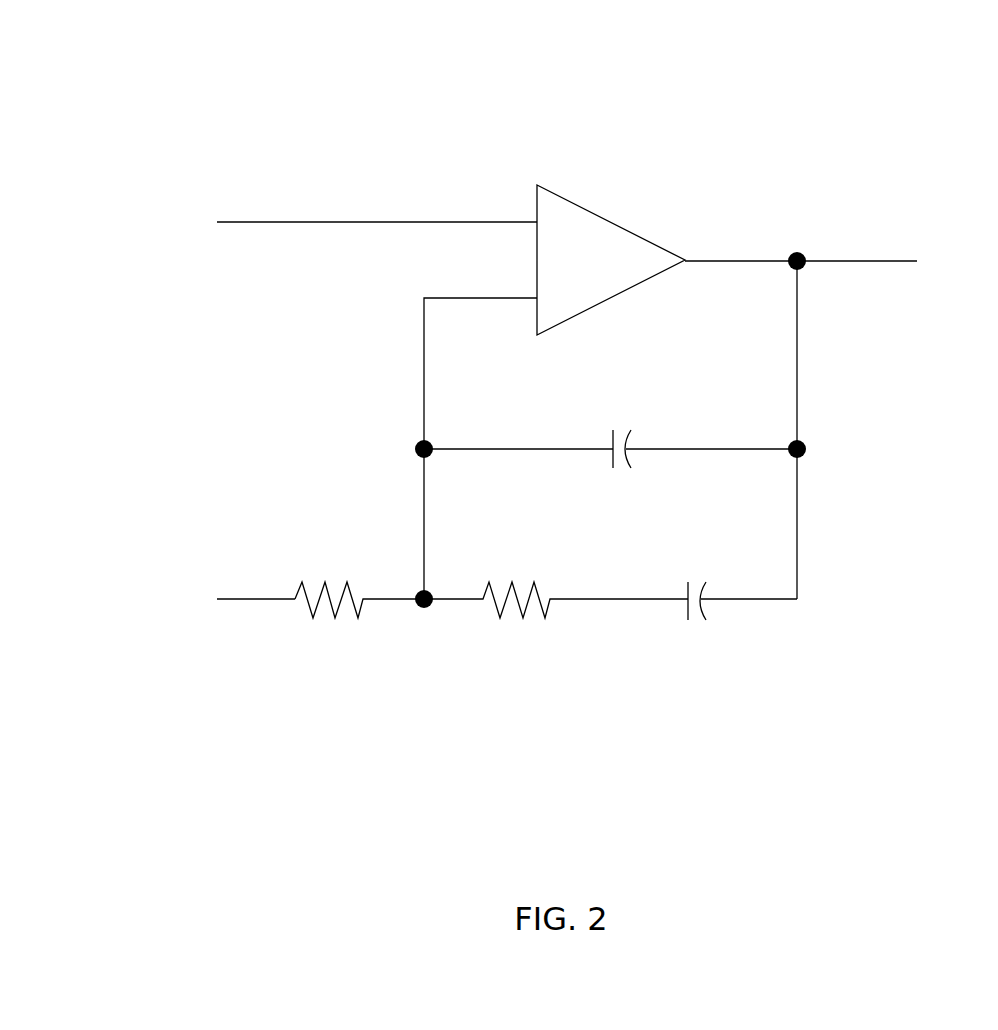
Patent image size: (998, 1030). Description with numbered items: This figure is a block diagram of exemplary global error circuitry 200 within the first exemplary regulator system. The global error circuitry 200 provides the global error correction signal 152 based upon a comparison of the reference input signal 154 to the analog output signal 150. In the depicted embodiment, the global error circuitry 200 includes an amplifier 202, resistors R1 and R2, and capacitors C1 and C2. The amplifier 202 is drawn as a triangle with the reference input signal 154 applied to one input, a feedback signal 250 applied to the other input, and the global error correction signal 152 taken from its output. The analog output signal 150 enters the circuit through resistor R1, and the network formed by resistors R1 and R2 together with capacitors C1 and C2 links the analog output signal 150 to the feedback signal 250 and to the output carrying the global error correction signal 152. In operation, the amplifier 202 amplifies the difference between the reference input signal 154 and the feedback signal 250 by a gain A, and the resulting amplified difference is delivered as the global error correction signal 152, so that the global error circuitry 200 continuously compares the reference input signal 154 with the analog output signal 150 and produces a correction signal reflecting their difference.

The global error circuitry 200 is at (889, 84).
The amplifier 202 is at (607, 221).
The reference input signal 154 is at (355, 221).
The global error correction signal 152 is at (827, 262).
The feedback signal 250 is at (424, 343).
The analog output signal 150 is at (234, 597).
The resistor R1 is at (359, 585).
The resistor R2 is at (556, 585).
The capacitor C1 is at (740, 586).
The capacitor C2 is at (610, 431).